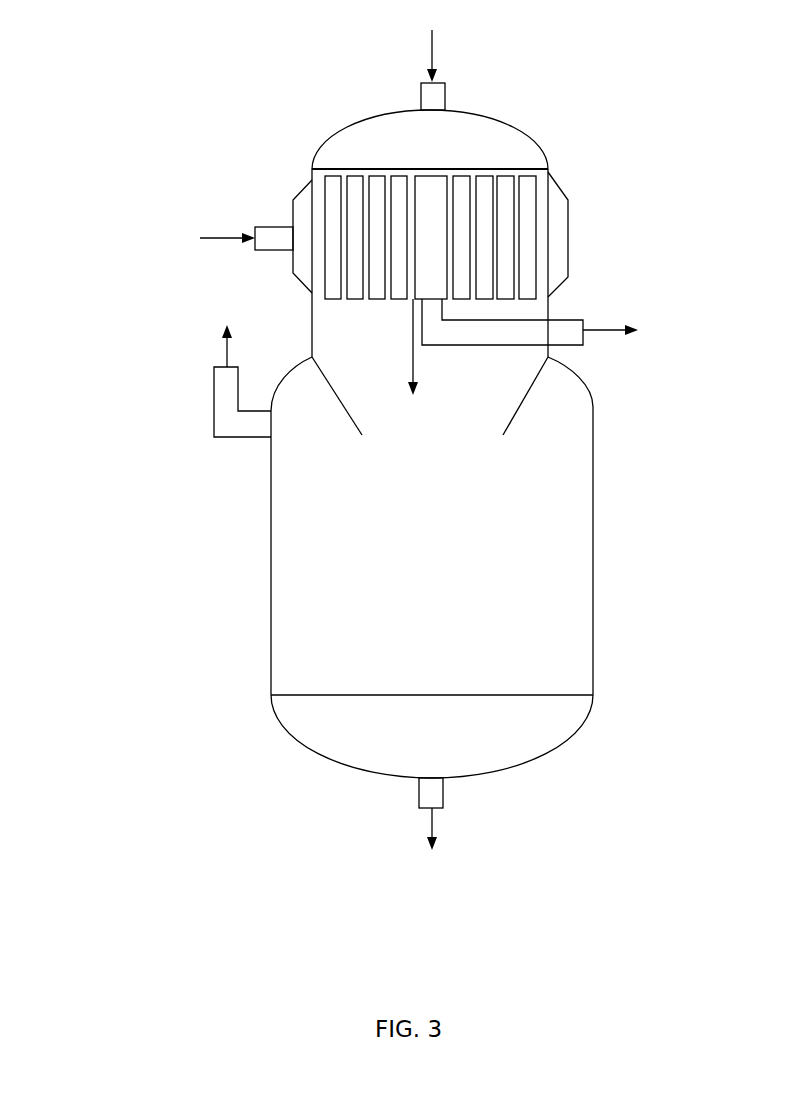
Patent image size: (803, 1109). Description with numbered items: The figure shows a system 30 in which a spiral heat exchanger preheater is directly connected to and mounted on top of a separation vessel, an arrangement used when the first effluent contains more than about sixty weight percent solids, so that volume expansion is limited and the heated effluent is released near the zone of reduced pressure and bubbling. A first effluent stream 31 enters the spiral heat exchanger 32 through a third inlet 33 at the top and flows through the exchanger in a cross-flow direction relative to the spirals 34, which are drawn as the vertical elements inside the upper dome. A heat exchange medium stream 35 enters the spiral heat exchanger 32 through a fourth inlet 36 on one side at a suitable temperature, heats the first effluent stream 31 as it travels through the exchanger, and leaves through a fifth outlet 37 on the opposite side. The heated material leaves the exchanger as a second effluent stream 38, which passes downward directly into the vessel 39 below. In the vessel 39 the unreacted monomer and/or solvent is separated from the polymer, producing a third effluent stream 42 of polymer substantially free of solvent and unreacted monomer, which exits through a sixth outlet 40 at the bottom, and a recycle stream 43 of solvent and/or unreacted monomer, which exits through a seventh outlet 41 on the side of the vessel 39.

The system 30 is at (150, 176).
The first effluent stream 31 is at (425, 43).
The spiral heat exchanger 32 is at (318, 182).
The third inlet 33 is at (432, 95).
The spirals 34 is at (527, 190).
The heat exchange medium stream 35 is at (418, 284).
The fourth inlet 36 is at (273, 238).
The fifth outlet 37 is at (565, 330).
The second effluent stream 38 is at (417, 361).
The vessel 39 is at (320, 543).
The sixth outlet 40 is at (433, 795).
The seventh outlet 41 is at (222, 403).
The third effluent stream 42 is at (432, 840).
The recycle stream 43 is at (232, 333).